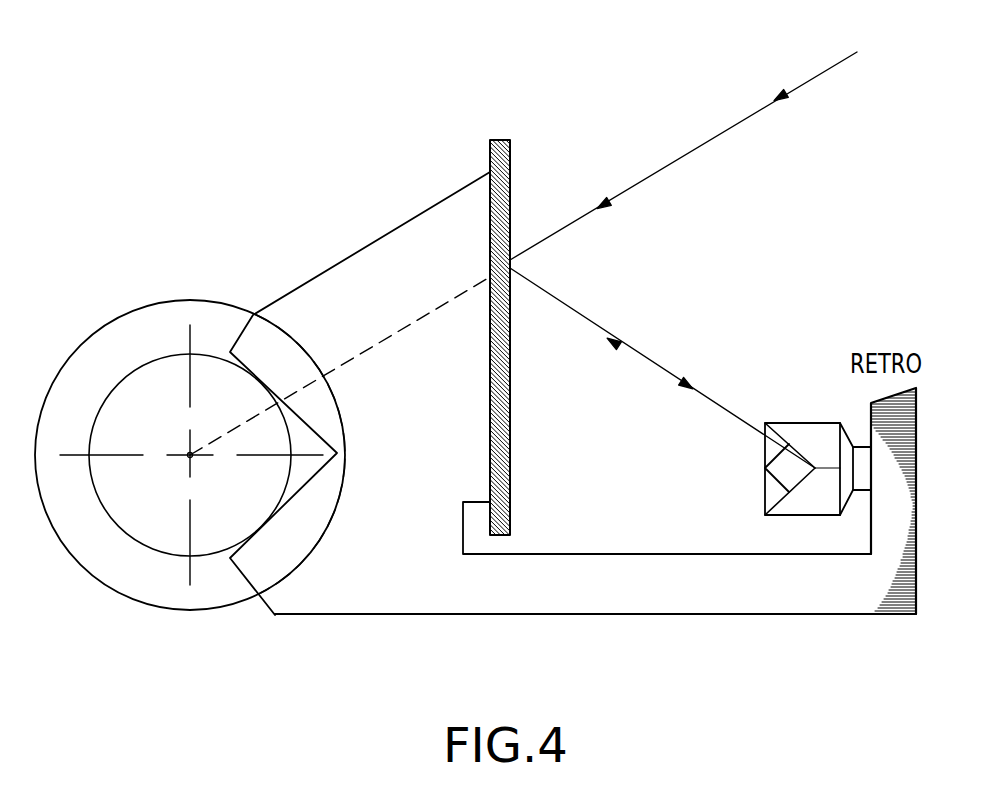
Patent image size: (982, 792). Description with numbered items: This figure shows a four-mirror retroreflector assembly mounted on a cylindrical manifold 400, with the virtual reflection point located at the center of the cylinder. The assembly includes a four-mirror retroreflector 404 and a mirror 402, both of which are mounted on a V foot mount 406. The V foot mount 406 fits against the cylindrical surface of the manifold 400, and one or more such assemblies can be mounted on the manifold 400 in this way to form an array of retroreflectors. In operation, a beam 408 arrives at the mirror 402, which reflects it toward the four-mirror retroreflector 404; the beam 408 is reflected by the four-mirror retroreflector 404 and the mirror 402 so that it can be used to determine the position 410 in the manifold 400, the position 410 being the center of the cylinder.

The cylindrical manifold 400 is at (176, 300).
The mirror 402 is at (511, 445).
The four-mirror retroreflector 404 is at (803, 422).
The V foot mount 406 is at (693, 616).
The beam 408 is at (782, 92).
The position 410 is at (190, 457).